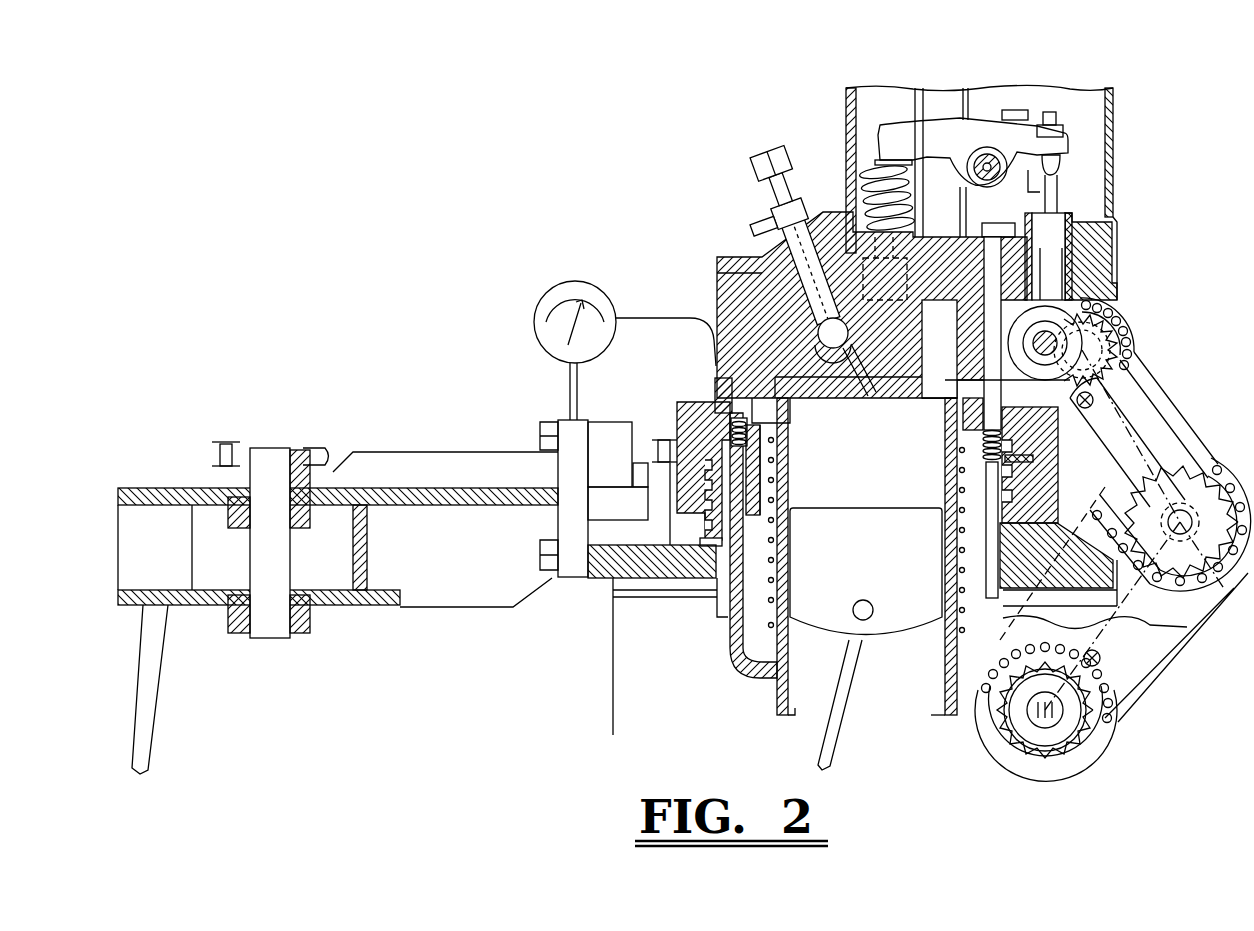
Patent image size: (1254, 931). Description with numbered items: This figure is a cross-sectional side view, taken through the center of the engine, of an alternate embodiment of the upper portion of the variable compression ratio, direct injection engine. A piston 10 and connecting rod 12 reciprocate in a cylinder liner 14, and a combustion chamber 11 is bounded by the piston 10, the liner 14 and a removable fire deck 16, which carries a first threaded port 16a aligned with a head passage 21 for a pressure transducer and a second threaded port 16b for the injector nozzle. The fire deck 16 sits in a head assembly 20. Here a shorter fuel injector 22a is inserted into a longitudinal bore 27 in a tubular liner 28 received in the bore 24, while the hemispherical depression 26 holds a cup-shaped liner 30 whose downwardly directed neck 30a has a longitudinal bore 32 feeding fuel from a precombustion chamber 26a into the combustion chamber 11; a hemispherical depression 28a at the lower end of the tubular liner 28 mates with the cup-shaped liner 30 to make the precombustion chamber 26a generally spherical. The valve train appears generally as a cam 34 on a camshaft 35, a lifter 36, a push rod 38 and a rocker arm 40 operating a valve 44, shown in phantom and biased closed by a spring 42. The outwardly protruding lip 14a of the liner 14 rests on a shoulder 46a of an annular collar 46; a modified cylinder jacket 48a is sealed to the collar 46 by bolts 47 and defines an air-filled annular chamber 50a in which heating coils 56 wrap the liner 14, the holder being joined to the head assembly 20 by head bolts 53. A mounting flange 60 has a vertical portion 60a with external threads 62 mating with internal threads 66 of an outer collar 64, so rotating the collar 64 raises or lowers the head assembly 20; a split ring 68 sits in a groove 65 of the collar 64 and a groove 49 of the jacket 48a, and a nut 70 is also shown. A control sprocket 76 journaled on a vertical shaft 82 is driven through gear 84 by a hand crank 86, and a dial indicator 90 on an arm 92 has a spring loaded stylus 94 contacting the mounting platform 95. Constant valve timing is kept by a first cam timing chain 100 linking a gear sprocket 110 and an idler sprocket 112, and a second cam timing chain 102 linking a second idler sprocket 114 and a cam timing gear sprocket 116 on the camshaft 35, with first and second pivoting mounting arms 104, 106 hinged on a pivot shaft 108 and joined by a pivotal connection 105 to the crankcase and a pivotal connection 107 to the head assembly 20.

The piston 10 is at (853, 583).
The combustion chamber 11 is at (853, 479).
The connecting rod 12 is at (850, 712).
The cylinder liner 14 is at (947, 485).
The outwardly protruding lip 14a is at (791, 402).
The fire deck 16 is at (820, 400).
The first threaded port 16a is at (934, 392).
The second threaded port 16b is at (841, 388).
The head assembly 20 is at (668, 262).
The head passage 21 is at (926, 329).
The shorter fuel injector 22a is at (795, 228).
The bore 24 is at (717, 292).
The hemispherical depression 26 is at (937, 341).
The precombustion chamber 26a is at (822, 350).
The longitudinal bore 27 is at (773, 214).
The tubular liner 28 is at (760, 250).
The hemispherical depression 28a is at (816, 322).
The cup-shaped liner 30 is at (822, 364).
The downwardly directed neck 30a is at (866, 396).
The longitudinal bore 32 is at (856, 404).
The cam 34 is at (1029, 447).
The camshaft 35 is at (1046, 277).
The lifter 36 is at (1036, 276).
The push rod 38 is at (1050, 194).
The rocker arm 40 is at (936, 141).
The spring 42 is at (860, 168).
The valve 44 is at (908, 291).
The annular collar 46 is at (766, 438).
The shoulder 46a is at (958, 440).
The bolts 47 is at (714, 380).
The modified cylinder jacket 48a is at (732, 652).
The groove 49 is at (757, 470).
The annular chamber 50a is at (772, 586).
The head bolts 53 is at (1002, 228).
The heating coils 56 is at (946, 579).
The mounting flange 60 is at (606, 576).
The vertical portion 60a is at (726, 570).
The external threads 62 is at (716, 536).
The outer collar 64 is at (677, 404).
The groove 65 is at (675, 440).
The internal threads 66 is at (704, 484).
The split ring 68 is at (735, 425).
The nut 70 is at (228, 442).
The control sprocket 76 is at (303, 448).
The vertical shaft 82 is at (270, 628).
The gear 84 is at (302, 630).
The hand crank 86 is at (357, 602).
The dial indicator 90 is at (568, 290).
The arm 92 is at (632, 324).
The spring loaded stylus 94 is at (568, 383).
The mounting platform 95 is at (565, 423).
The first cam timing chain 100 is at (1110, 734).
The second cam timing chain 102 is at (1138, 352).
The first pivoting mounting arm 104 is at (1113, 609).
The pivotal connection 105 is at (1098, 665).
The second pivoting mounting arm 106 is at (1114, 451).
The pivotal connection 107 is at (1092, 404).
The pivot shaft 108 is at (1190, 501).
The gear sprocket 110 is at (1050, 772).
The idler sprocket 112 is at (1120, 700).
The second idler sprocket 114 is at (1192, 556).
The cam timing gear sprocket 116 is at (1127, 340).